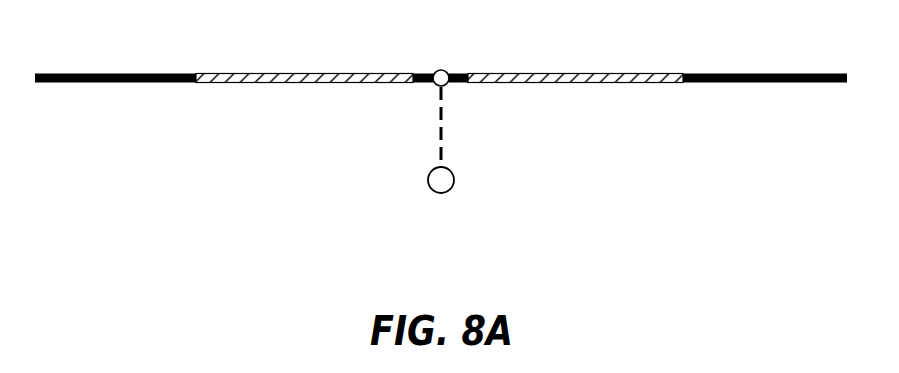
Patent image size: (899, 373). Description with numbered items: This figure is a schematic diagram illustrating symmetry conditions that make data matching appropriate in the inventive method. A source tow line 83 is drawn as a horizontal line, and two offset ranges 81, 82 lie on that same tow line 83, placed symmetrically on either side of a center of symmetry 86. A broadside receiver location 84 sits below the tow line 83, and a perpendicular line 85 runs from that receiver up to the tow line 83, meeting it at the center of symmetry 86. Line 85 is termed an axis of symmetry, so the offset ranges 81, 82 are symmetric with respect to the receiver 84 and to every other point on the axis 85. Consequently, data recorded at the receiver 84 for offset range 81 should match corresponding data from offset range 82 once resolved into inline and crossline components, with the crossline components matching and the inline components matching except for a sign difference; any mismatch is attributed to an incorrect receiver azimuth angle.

The offset range 81 is at (298, 73).
The offset range 82 is at (582, 73).
The tow line 83 is at (130, 73).
The broadside receiver location 84 is at (428, 178).
The perpendicular line 85 is at (443, 123).
The center of symmetry 86 is at (440, 70).